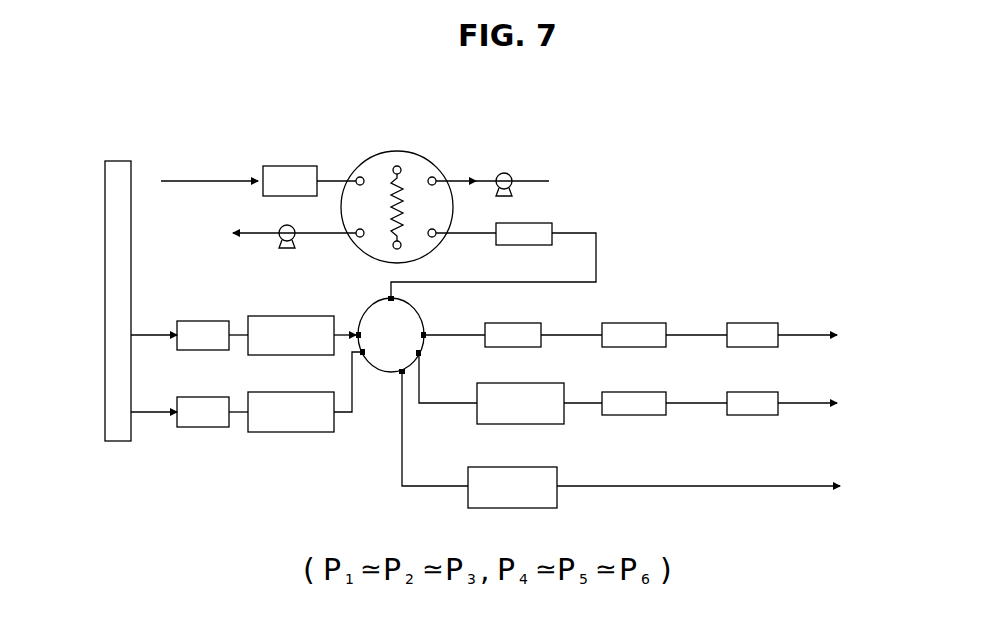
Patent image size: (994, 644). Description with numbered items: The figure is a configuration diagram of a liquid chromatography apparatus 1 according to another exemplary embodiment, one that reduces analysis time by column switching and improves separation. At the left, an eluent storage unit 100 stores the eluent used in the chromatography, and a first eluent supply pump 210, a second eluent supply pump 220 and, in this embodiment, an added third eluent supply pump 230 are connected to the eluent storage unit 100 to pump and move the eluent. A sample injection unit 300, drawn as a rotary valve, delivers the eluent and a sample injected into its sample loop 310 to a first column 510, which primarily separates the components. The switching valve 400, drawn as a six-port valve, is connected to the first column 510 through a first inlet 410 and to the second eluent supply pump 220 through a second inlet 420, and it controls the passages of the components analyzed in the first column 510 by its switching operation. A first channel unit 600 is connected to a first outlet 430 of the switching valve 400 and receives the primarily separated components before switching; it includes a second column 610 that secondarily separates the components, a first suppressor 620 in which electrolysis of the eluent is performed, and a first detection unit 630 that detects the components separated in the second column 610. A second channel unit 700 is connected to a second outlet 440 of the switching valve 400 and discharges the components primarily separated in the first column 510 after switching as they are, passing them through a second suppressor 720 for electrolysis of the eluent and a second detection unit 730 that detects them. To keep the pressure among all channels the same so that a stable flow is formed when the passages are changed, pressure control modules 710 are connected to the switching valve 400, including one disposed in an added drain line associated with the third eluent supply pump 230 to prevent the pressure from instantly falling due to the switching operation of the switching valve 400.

The liquid chromatography apparatus 1 is at (693, 147).
The eluent storage unit 100 is at (117, 161).
The first eluent supply pump 210 is at (290, 166).
The second eluent supply pump 220 is at (203, 321).
The third eluent supply pump 230 is at (203, 427).
The sample injection unit 300 is at (404, 152).
The sample loop 310 is at (391, 174).
The switching valve 400 is at (375, 366).
The first inlet 410 is at (388, 296).
The second inlet 420 is at (358, 330).
The first outlet 430 is at (423, 331).
The second outlet 440 is at (422, 357).
The first column 510 is at (538, 223).
The first channel unit 600 is at (462, 335).
The second column 610 is at (511, 323).
The first suppressor 620 is at (634, 323).
The first detection unit 630 is at (752, 323).
The second channel unit 700 is at (440, 404).
The pressure control module 710 is at (290, 316).
The second suppressor 720 is at (636, 392).
The second detection unit 730 is at (755, 392).